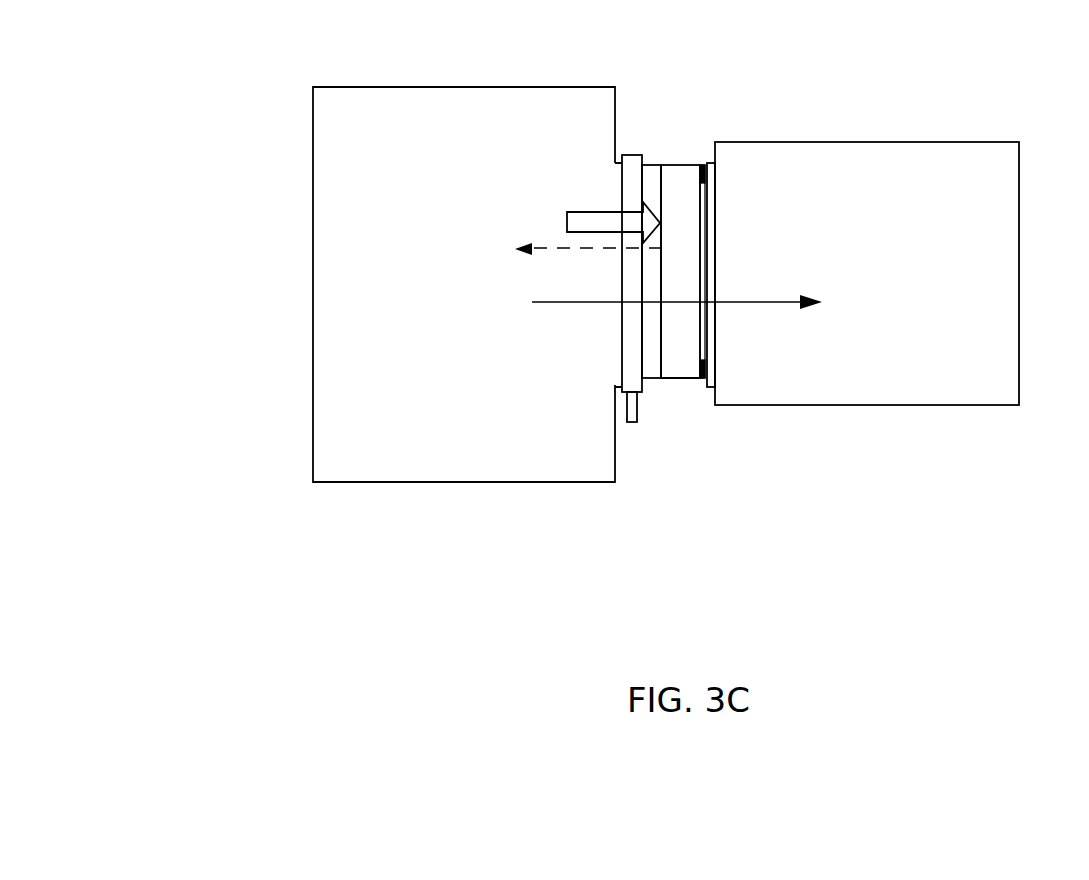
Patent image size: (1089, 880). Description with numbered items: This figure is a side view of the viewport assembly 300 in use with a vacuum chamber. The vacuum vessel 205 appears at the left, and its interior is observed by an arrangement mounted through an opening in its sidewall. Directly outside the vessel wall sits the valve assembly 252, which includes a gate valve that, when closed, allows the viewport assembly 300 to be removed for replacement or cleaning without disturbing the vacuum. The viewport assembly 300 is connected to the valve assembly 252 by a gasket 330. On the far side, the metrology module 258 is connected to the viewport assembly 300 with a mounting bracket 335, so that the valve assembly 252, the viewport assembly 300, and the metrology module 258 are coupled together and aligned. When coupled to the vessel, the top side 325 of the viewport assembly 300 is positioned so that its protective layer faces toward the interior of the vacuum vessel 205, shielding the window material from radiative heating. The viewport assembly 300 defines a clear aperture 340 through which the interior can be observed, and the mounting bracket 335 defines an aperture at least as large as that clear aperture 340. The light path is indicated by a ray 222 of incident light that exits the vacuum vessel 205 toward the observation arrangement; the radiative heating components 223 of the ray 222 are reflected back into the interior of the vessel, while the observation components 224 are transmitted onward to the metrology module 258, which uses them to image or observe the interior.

The vacuum vessel 205 is at (253, 270).
The ray 222 is at (602, 207).
The radiative heating components 223 is at (610, 250).
The observation components 224 is at (602, 303).
The valve assembly 252 is at (638, 163).
The metrology module 258 is at (865, 177).
The viewport assembly 300 is at (685, 210).
The top side 325 is at (662, 378).
The gasket 330 is at (653, 183).
The mounting bracket 335 is at (702, 380).
The clear aperture 340 is at (717, 163).